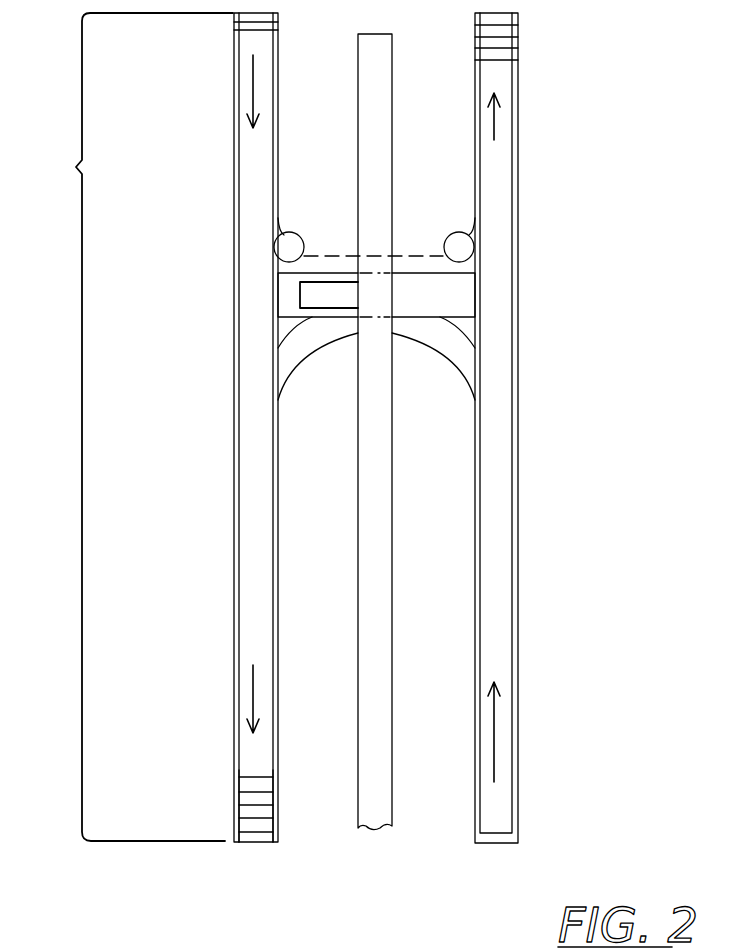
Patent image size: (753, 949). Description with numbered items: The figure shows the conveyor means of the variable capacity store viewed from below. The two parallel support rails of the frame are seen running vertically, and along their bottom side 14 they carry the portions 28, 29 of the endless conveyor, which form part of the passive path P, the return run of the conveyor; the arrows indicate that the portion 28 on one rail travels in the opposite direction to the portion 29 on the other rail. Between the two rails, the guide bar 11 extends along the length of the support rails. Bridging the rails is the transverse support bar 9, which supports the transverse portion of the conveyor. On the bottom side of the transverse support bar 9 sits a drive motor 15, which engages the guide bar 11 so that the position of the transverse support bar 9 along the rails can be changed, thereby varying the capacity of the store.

The passive path P is at (62, 167).
The conveyor portion 28 is at (255, 608).
The bottom side 14 is at (258, 757).
The conveyor portion 29 is at (498, 570).
The guide bar 11 is at (377, 682).
The transverse support bar 9 is at (448, 296).
The drive motor 15 is at (313, 292).